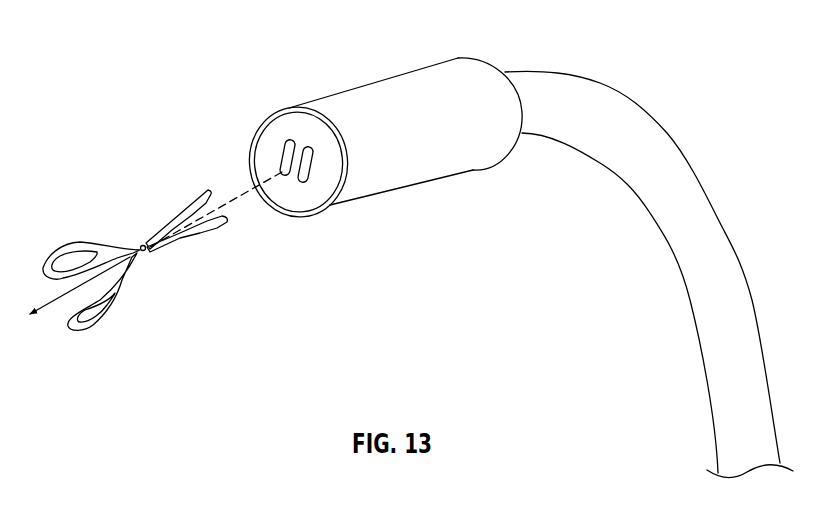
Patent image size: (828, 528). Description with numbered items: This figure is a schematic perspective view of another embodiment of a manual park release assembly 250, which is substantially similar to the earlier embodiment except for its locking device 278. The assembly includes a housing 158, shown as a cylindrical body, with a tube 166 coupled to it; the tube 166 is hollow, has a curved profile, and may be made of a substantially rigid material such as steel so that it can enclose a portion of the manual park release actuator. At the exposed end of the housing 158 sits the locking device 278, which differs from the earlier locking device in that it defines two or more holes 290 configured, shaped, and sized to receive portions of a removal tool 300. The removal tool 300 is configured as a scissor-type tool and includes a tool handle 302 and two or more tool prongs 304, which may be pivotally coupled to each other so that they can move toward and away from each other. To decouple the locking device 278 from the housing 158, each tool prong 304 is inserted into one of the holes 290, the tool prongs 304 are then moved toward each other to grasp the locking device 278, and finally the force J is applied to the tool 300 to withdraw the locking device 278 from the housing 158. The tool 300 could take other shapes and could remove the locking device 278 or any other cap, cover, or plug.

The manual park release assembly 250 is at (457, 43).
The housing 158 is at (418, 72).
The tube 166 is at (668, 135).
The locking device 278 is at (306, 202).
The holes 290 is at (283, 148).
The removal tool 300 is at (155, 212).
The tool handle 302 is at (78, 240).
The tool prongs 304 is at (183, 207).
The force J is at (51, 299).